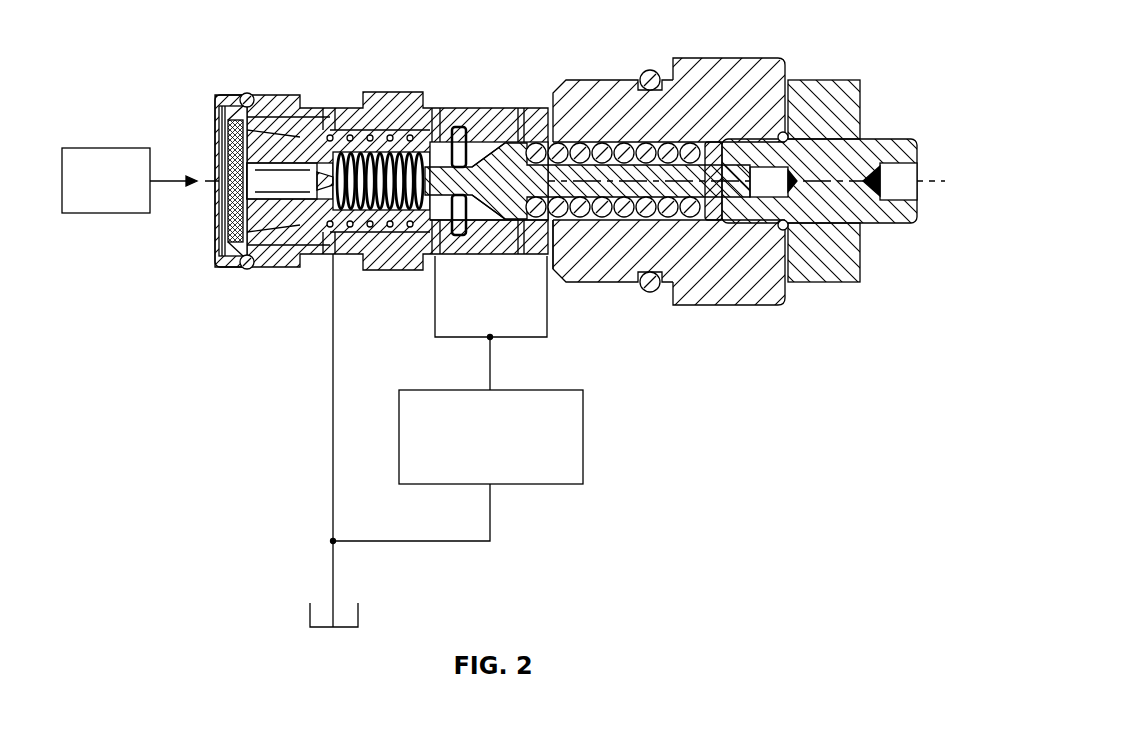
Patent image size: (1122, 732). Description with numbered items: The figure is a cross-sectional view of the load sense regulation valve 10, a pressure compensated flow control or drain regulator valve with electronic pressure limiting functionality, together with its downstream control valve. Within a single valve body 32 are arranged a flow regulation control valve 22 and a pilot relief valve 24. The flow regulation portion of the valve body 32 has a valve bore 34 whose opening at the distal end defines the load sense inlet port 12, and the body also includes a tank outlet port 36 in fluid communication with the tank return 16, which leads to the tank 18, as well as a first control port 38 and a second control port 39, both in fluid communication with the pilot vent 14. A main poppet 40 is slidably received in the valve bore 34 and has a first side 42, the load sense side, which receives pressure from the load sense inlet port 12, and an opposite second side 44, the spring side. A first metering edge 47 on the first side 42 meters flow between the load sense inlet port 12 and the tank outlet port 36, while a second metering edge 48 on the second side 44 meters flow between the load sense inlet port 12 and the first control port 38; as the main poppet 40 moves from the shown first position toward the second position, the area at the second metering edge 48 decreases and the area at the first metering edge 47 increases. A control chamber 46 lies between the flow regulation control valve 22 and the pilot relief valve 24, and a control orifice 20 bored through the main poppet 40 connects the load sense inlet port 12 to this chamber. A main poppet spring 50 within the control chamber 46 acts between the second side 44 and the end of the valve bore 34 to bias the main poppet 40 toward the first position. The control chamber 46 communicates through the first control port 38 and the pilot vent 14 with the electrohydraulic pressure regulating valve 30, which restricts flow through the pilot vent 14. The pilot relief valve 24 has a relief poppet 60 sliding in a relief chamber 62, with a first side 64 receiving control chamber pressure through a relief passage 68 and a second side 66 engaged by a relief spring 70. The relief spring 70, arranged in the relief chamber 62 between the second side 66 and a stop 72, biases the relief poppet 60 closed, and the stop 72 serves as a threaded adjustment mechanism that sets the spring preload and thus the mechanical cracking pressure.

The load sense regulation valve 10 is at (822, 25).
The load sense inlet port 12 is at (190, 142).
The pilot vent 14 is at (489, 339).
The tank return 16 is at (333, 378).
The tank 18 is at (362, 614).
The control orifice 20 is at (333, 158).
The flow regulation control valve 22 is at (390, 58).
The pilot relief valve 24 is at (608, 64).
The electrohydraulic pressure regulating valve 30 is at (584, 440).
The valve body 32 is at (712, 62).
The valve bore 34 is at (250, 106).
The tank outlet port 36 is at (320, 252).
The first control port 38 is at (450, 245).
The second control port 39 is at (553, 240).
The main poppet 40 is at (303, 148).
The first side 42 is at (252, 250).
The second side 44 is at (455, 127).
The control chamber 46 is at (470, 133).
The first metering edge 47 is at (260, 128).
The second metering edge 48 is at (395, 225).
The main poppet spring 50 is at (398, 128).
The relief poppet 60 is at (522, 138).
The relief chamber 62 is at (520, 145).
The first side 64 is at (493, 210).
The second side 66 is at (600, 232).
The relief passage 68 is at (500, 150).
The relief spring 70 is at (665, 136).
The stop 72 is at (858, 150).